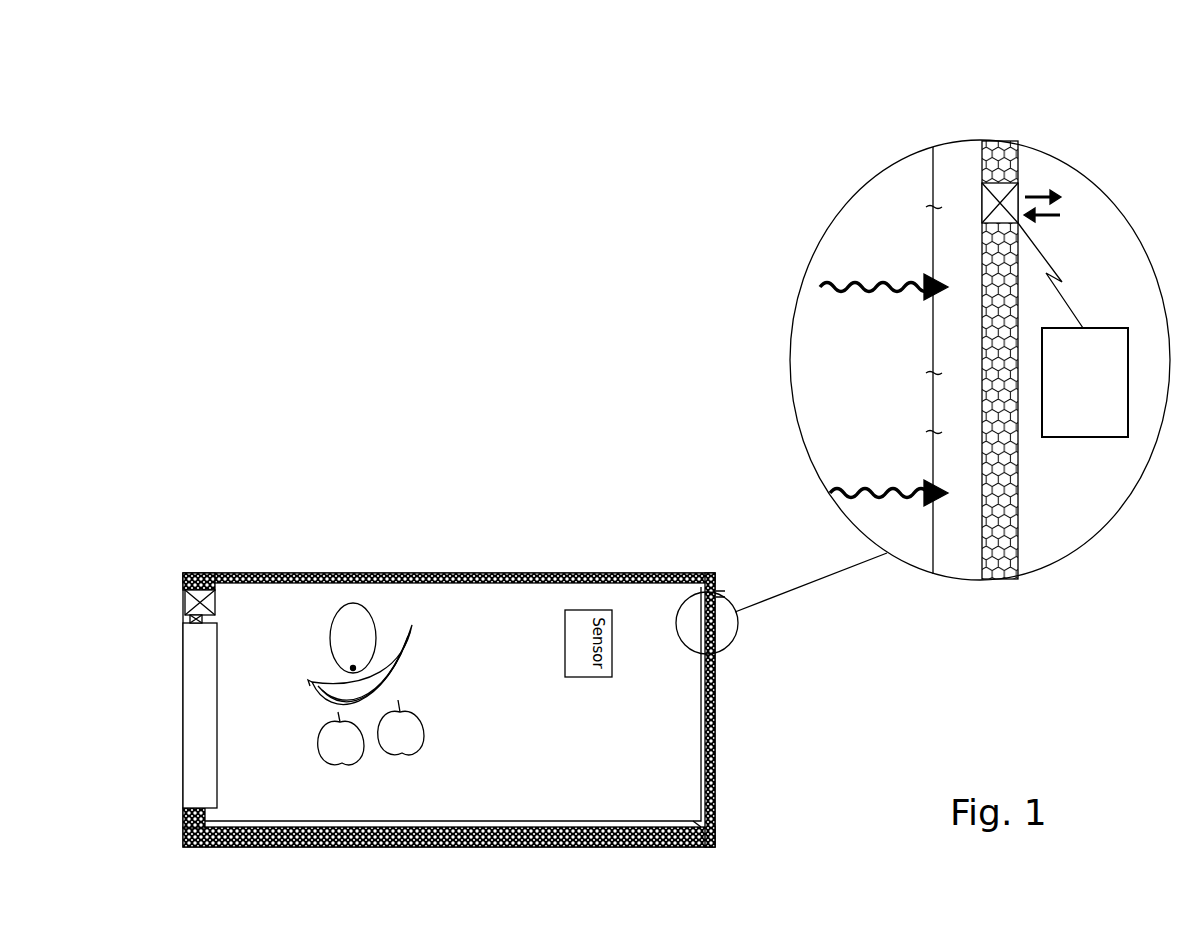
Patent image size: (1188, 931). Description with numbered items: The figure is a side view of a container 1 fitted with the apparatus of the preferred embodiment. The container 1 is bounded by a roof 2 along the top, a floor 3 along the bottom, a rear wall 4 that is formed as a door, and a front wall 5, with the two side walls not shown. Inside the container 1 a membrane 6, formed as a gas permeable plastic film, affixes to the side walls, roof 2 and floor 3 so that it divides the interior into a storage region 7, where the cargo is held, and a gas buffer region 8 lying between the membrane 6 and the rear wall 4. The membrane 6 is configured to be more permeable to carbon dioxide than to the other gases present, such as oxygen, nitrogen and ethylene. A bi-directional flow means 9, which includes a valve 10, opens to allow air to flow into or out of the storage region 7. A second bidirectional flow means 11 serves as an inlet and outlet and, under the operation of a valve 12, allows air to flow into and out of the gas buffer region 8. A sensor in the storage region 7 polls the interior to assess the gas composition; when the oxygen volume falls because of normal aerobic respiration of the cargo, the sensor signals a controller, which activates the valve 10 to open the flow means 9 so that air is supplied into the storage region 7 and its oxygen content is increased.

The container 1 is at (440, 470).
The roof 2 is at (508, 572).
The floor 3 is at (558, 847).
The rear wall 4 is at (715, 723).
The front wall 5 is at (183, 747).
The membrane 6 is at (698, 651).
The storage region 7 is at (382, 600).
The gas buffer region 8 is at (715, 812).
The bi-directional flow means 9 is at (183, 619).
The valve 10 is at (209, 601).
The bidirectional flow means 11 is at (904, 398).
The valve 12 is at (718, 587).